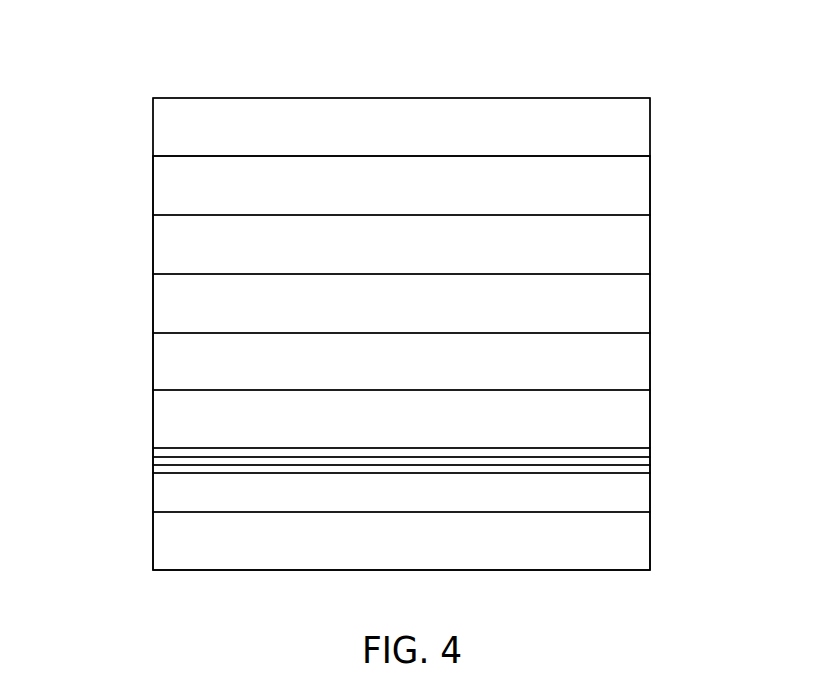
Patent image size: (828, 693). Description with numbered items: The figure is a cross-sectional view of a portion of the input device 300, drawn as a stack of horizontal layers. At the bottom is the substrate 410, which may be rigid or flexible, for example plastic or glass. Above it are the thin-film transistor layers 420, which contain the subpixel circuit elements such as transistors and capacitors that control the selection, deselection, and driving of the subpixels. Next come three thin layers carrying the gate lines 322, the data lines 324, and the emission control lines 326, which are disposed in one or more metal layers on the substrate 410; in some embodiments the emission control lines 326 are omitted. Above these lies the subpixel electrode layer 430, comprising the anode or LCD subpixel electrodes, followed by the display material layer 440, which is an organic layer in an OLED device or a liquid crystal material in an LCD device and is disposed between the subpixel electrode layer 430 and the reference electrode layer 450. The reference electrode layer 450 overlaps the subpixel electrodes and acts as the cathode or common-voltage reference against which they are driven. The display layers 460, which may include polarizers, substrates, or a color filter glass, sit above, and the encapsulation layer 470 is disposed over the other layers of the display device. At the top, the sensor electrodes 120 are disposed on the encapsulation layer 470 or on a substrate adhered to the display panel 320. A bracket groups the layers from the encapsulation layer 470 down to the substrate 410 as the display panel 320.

The input device 300 is at (172, 58).
The sensor electrodes 120 is at (652, 120).
The encapsulation layer 470 is at (652, 183).
The display layers 460 is at (652, 243).
The reference electrode layer 450 is at (652, 302).
The display material layer 440 is at (652, 358).
The subpixel electrode layer 430 is at (652, 413).
The emission control lines 326 is at (652, 448).
The data lines 324 is at (152, 460).
The gate lines 322 is at (652, 470).
The thin-film transistor (TFT) layers 420 is at (652, 495).
The substrate 410 is at (652, 540).
The display panel 320 is at (78, 569).